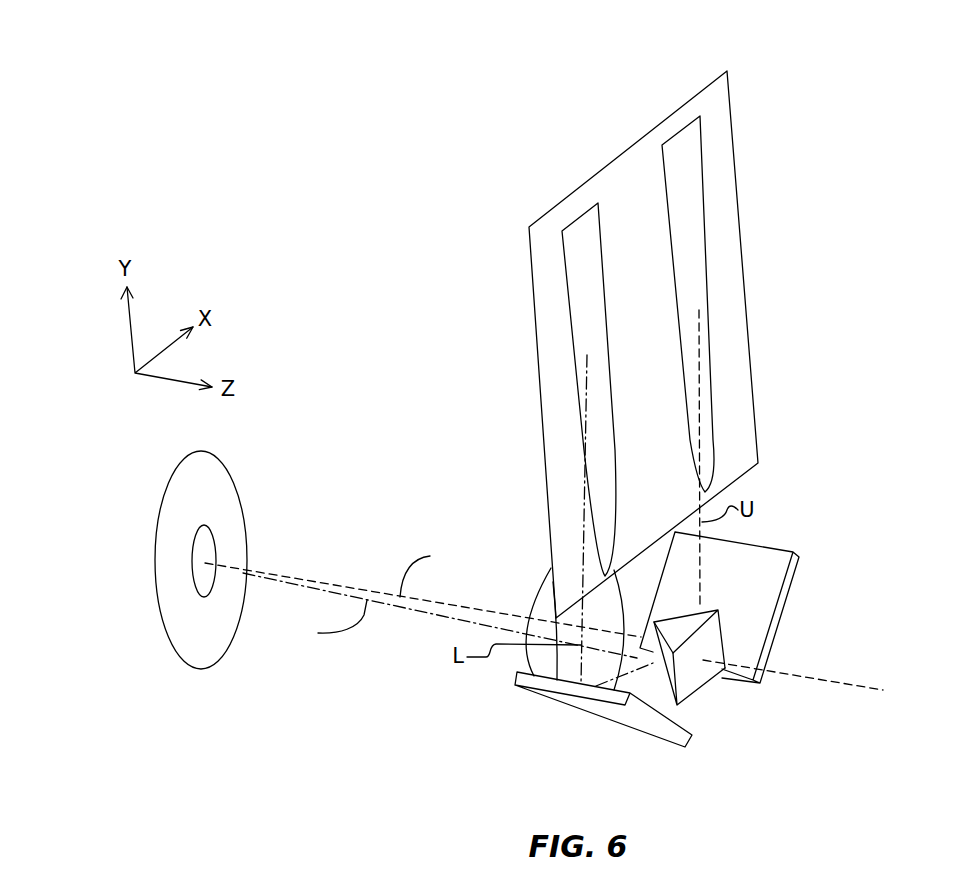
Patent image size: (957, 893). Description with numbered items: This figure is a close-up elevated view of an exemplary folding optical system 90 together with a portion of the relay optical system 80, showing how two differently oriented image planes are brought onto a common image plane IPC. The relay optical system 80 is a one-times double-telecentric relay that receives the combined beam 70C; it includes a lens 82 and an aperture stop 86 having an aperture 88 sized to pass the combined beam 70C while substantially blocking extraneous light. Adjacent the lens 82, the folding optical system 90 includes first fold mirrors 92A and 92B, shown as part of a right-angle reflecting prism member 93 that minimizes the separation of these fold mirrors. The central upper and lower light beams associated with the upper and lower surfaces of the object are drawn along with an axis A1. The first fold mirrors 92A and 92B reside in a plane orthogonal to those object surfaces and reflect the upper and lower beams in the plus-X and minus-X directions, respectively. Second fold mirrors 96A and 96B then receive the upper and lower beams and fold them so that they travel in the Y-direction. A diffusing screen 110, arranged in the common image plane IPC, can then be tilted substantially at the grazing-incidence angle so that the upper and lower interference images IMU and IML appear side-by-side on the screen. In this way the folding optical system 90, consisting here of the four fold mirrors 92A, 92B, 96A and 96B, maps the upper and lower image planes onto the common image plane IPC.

The relay optical system 80 is at (289, 456).
The lens 82 is at (536, 597).
The aperture stop 86 is at (179, 468).
The aperture 88 is at (205, 594).
The folding optical system 90 is at (795, 501).
The first fold mirror 92A is at (689, 696).
The first fold mirror 92B is at (686, 608).
The right-angle reflecting prism member 93 is at (696, 670).
The second fold mirror 96A is at (582, 712).
The second fold mirror 96B is at (792, 594).
The diffusing screen 110 is at (617, 157).
The combined beam 70C is at (331, 562).
The optical axis A1 is at (850, 688).
The common image plane IPC is at (747, 91).
The interference image of lower surface IML is at (570, 226).
The interference image of upper surface IMU is at (678, 133).